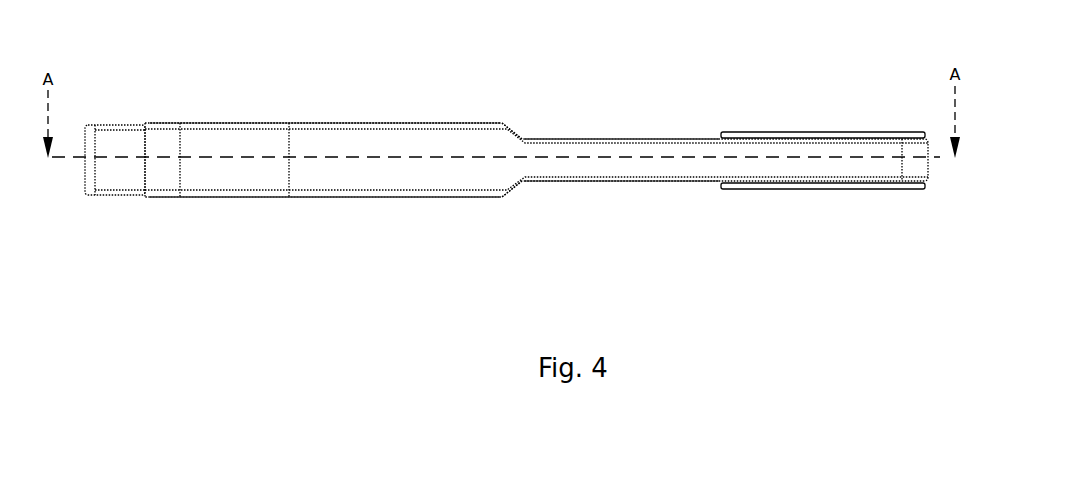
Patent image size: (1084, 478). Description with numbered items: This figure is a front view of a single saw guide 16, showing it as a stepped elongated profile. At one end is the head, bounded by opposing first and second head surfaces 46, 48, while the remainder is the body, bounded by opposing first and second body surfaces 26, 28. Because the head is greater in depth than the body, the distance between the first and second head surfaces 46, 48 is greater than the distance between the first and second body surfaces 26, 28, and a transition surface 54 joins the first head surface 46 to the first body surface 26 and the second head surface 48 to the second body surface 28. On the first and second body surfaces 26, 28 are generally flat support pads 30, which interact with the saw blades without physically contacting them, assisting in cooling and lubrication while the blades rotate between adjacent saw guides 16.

The saw guide 16 is at (768, 233).
The first body surface 26 is at (615, 138).
The second body surface 28 is at (612, 182).
The support pad 30 is at (782, 132).
The first head surface 46 is at (388, 122).
The second head surface 48 is at (388, 197).
The transition surface 54 is at (515, 131).